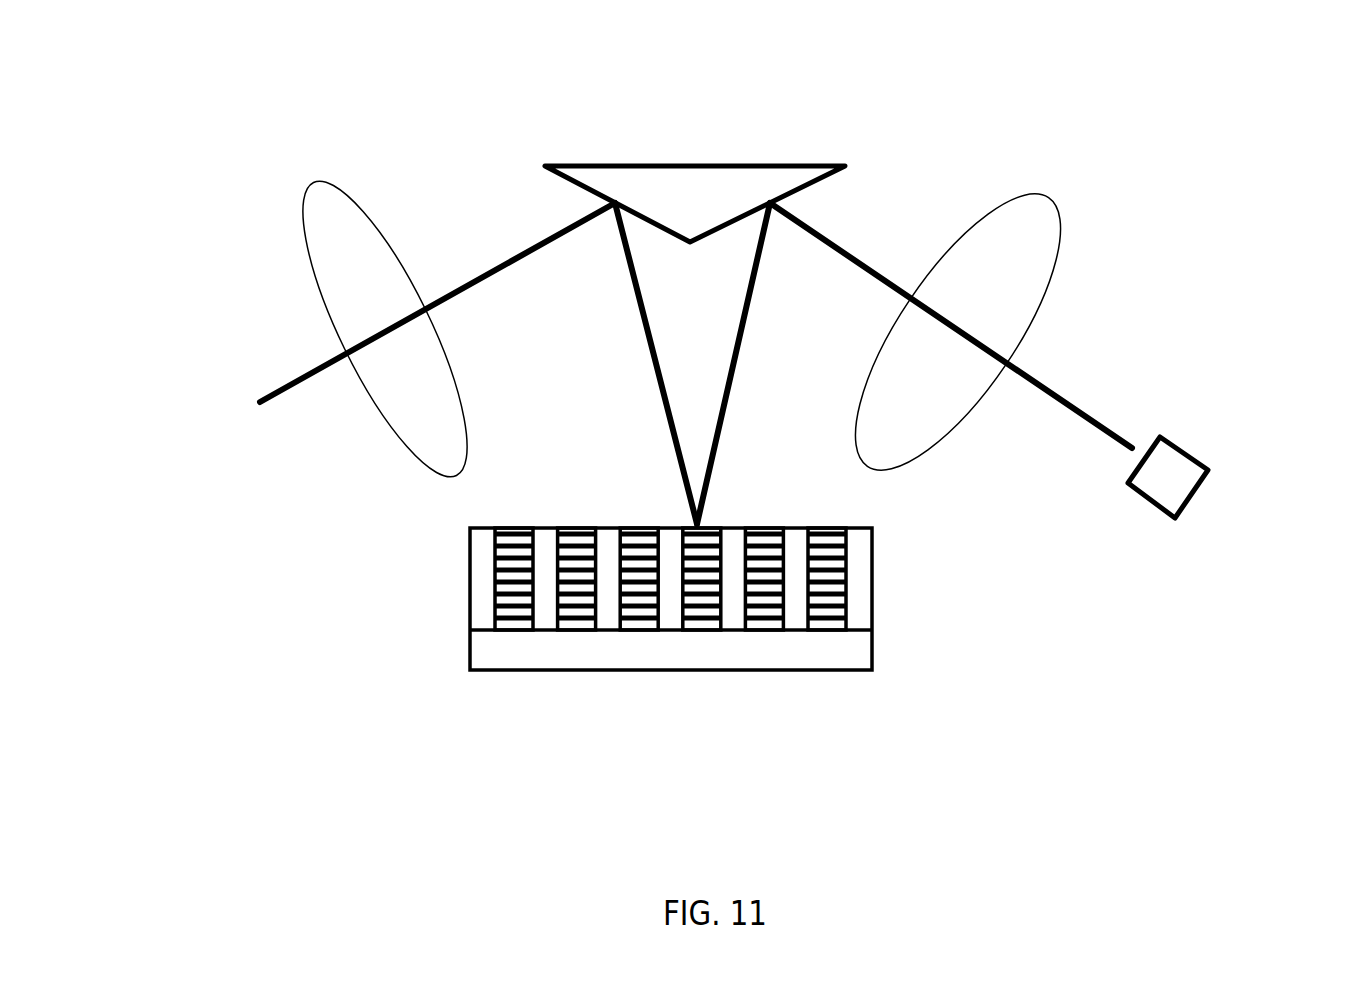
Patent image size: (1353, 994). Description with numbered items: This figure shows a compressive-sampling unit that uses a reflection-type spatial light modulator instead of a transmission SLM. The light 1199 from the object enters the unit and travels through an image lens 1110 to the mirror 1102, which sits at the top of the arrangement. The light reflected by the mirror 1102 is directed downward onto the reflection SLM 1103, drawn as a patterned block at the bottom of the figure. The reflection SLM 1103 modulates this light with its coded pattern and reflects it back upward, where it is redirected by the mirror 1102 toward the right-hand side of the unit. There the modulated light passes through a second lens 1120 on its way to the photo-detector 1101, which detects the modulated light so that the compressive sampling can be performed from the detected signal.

The photo-detector 1101 is at (1198, 452).
The mirror 1102 is at (682, 163).
The reflection SLM 1103 is at (890, 602).
The image lens 1110 is at (308, 177).
The second lens 1120 is at (1050, 195).
The light from the object 1199 is at (283, 412).